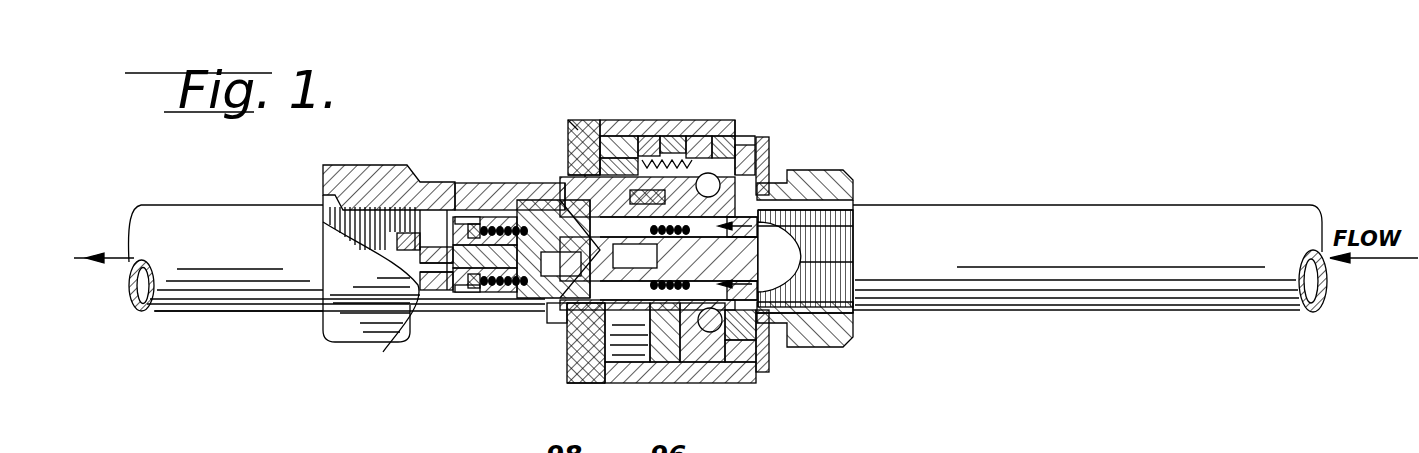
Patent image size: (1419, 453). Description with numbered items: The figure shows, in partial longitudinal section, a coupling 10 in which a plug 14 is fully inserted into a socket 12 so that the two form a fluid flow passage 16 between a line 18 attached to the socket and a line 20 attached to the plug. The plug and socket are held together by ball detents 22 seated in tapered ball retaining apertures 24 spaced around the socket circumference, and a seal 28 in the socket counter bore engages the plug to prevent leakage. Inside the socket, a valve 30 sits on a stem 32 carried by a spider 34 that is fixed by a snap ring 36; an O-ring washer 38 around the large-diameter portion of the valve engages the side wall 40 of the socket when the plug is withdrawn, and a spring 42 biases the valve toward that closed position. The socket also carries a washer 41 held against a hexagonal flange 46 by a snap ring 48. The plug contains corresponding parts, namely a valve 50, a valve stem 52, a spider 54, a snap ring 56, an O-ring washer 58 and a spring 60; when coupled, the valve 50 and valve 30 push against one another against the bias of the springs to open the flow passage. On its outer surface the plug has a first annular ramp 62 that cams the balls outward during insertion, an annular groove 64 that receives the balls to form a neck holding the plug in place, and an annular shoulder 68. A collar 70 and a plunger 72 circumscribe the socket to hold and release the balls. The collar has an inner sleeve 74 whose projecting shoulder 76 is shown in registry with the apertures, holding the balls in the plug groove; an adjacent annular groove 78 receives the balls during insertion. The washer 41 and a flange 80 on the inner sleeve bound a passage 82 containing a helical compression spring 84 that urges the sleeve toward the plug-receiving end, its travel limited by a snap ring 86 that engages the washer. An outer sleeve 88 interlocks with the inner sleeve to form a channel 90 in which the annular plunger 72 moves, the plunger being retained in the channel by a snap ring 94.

The coupling 10 is at (866, 136).
The socket 12 is at (318, 170).
The plug 14 is at (870, 182).
The fluid flow passage 16 is at (505, 292).
The line 18 is at (160, 213).
The line 20 is at (1173, 217).
The ball detents 22 is at (770, 150).
The ball retaining apertures 24 is at (770, 198).
The seal 28 is at (665, 243).
The valve 30 is at (565, 250).
The stem 32 is at (435, 258).
The spider 34 is at (371, 302).
The snap ring 36 is at (440, 218).
The O-ring washer 38 is at (520, 300).
The side wall 40 is at (558, 249).
The washer 41 is at (576, 128).
The spring 42 is at (475, 285).
The hexagonal flange 46 is at (586, 174).
The snap ring 48 is at (592, 183).
The valve 50 is at (610, 356).
The valve stem 52 is at (843, 262).
The spider 54 is at (843, 230).
The snap ring 56 is at (782, 346).
The O-ring washer 58 is at (635, 352).
The spring 60 is at (697, 356).
The first annular ramp 62 is at (668, 356).
The annular groove 64 is at (742, 363).
The annular shoulder 68 is at (842, 311).
The collar 70 is at (560, 373).
The plunger 72 is at (778, 136).
The inner sleeve 74 is at (714, 174).
The projecting shoulder 76 is at (746, 148).
The annular groove 78 is at (674, 168).
The flange 80 is at (690, 163).
The passage 82 is at (665, 158).
The helical compression spring 84 is at (618, 148).
The snap ring 86 is at (582, 166).
The outer sleeve 88 is at (592, 124).
The channel 90 is at (648, 158).
The snap ring 94 is at (630, 168).